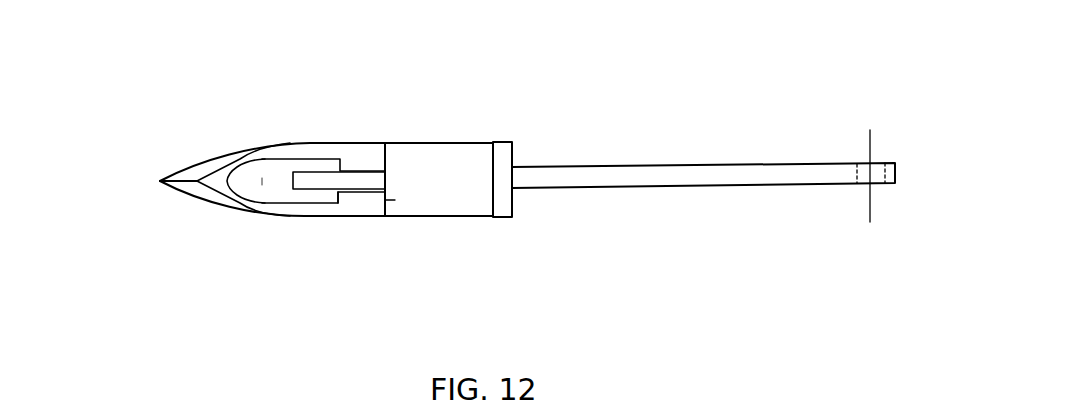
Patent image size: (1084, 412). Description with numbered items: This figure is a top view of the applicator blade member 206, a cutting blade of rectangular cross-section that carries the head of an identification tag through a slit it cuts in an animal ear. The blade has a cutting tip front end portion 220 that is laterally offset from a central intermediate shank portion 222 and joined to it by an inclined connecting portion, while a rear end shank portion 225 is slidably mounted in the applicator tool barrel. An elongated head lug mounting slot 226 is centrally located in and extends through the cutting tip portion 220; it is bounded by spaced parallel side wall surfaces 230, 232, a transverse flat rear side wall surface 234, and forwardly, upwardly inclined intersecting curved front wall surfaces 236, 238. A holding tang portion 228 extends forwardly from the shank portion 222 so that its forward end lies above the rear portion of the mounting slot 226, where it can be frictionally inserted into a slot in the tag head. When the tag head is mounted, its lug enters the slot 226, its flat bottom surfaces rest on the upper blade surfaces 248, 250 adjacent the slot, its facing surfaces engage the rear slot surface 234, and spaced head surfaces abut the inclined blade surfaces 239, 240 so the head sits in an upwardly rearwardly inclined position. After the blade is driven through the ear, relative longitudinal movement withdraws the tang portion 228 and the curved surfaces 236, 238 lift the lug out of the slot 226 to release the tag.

The blade member 206 is at (537, 102).
The cutting tip front end portion 220 is at (180, 173).
The central intermediate shank portion 222 is at (482, 217).
The rear end shank portion 225 is at (774, 187).
The head lug mounting slot 226 is at (265, 183).
The holding tang portion 228 is at (322, 180).
The side wall surface 230 is at (292, 172).
The side wall surface 232 is at (340, 198).
The rear side wall surface 234 is at (363, 205).
The curved front wall surface 236 is at (232, 150).
The curved front wall surface 238 is at (238, 210).
The inclined blade surface 239 is at (367, 157).
The inclined blade surface 240 is at (373, 200).
The upper blade surface 248 is at (270, 160).
The upper blade surface 250 is at (275, 197).